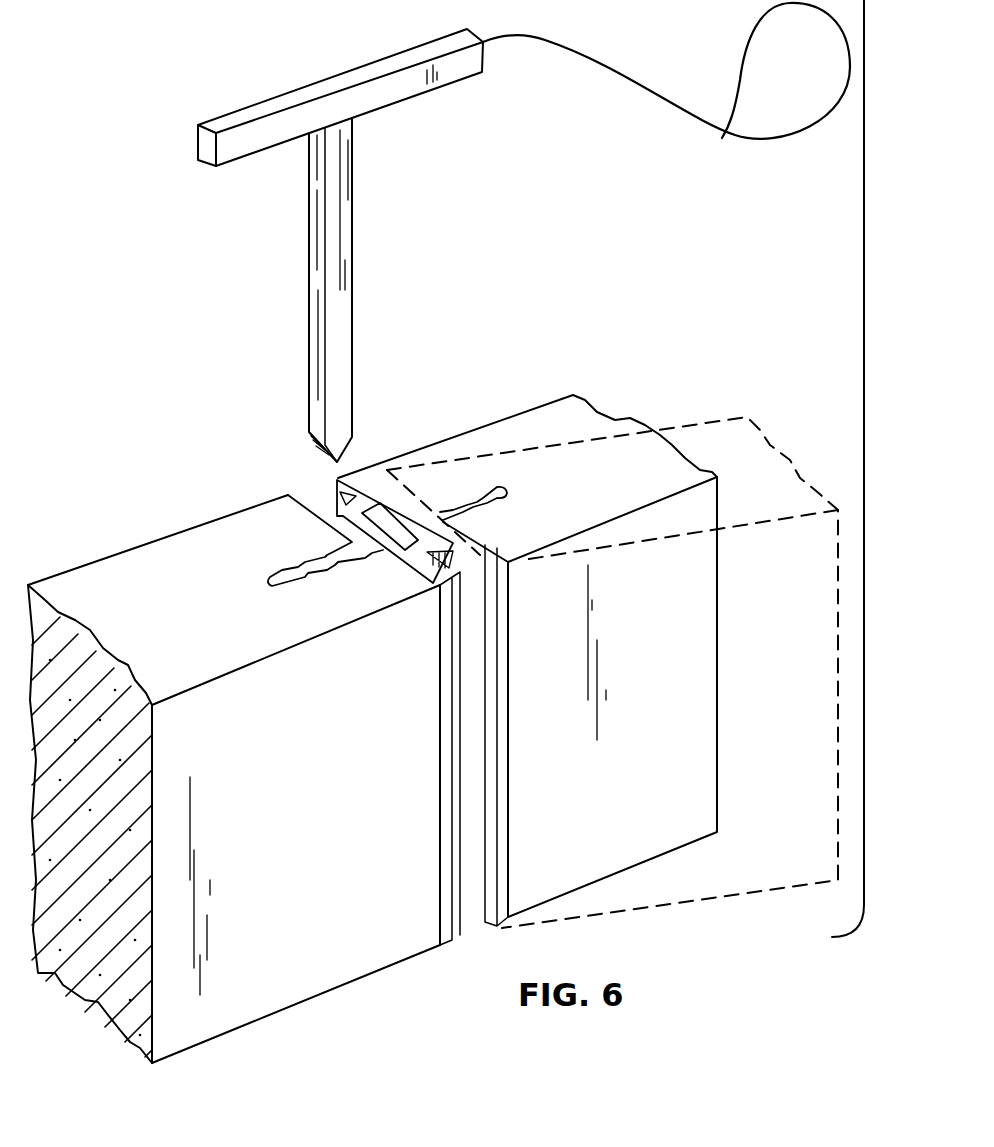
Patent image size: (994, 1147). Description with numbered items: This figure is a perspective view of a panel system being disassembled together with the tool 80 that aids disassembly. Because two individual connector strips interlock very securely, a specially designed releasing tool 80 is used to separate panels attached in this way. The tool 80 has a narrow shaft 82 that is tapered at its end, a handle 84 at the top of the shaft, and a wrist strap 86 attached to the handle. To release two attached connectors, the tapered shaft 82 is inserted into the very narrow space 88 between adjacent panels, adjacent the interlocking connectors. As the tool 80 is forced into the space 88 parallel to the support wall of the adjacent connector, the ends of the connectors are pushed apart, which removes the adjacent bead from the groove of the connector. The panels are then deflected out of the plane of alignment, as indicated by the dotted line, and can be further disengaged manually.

The tool 80 is at (240, 224).
The shaft 82 is at (309, 328).
The handle 84 is at (239, 110).
The wrist strap 86 is at (764, 141).
The space 88 is at (312, 494).